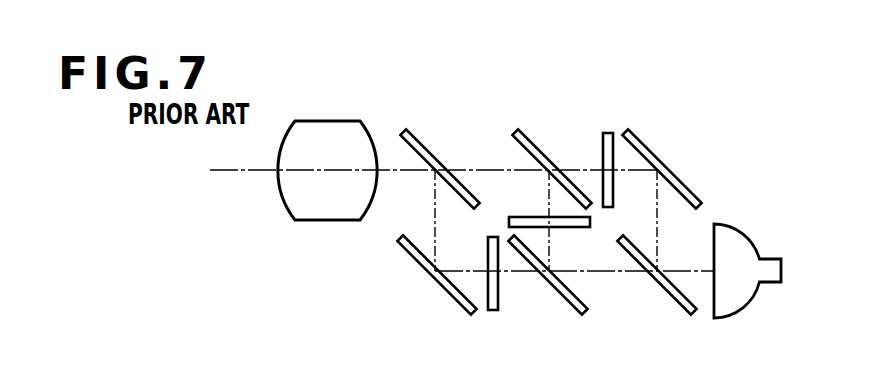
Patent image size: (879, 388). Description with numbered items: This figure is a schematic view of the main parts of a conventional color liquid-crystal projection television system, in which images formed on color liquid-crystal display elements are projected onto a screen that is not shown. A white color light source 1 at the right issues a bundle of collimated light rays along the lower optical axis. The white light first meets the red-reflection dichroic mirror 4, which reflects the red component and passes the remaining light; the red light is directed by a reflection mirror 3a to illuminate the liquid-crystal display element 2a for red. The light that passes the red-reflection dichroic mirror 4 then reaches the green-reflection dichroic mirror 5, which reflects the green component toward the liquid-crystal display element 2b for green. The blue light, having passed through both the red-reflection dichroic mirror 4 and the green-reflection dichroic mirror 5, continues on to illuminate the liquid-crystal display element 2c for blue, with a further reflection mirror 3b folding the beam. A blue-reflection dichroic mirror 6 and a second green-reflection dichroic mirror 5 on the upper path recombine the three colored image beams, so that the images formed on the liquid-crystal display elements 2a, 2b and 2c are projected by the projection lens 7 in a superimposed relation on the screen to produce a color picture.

The white color light source 1 is at (770, 255).
The liquid-crystal display element for red 2a is at (603, 150).
The liquid-crystal display element for green 2b is at (525, 217).
The liquid-crystal display element for blue 2c is at (500, 287).
The reflection mirror 3a is at (652, 148).
The reflection mirror 3b is at (422, 270).
The red-reflection dichroic mirror 4 is at (660, 283).
The green-reflection dichroic mirror 5 is at (540, 148).
The blue-reflection dichroic mirror 6 is at (425, 148).
The projection lens 7 is at (303, 222).